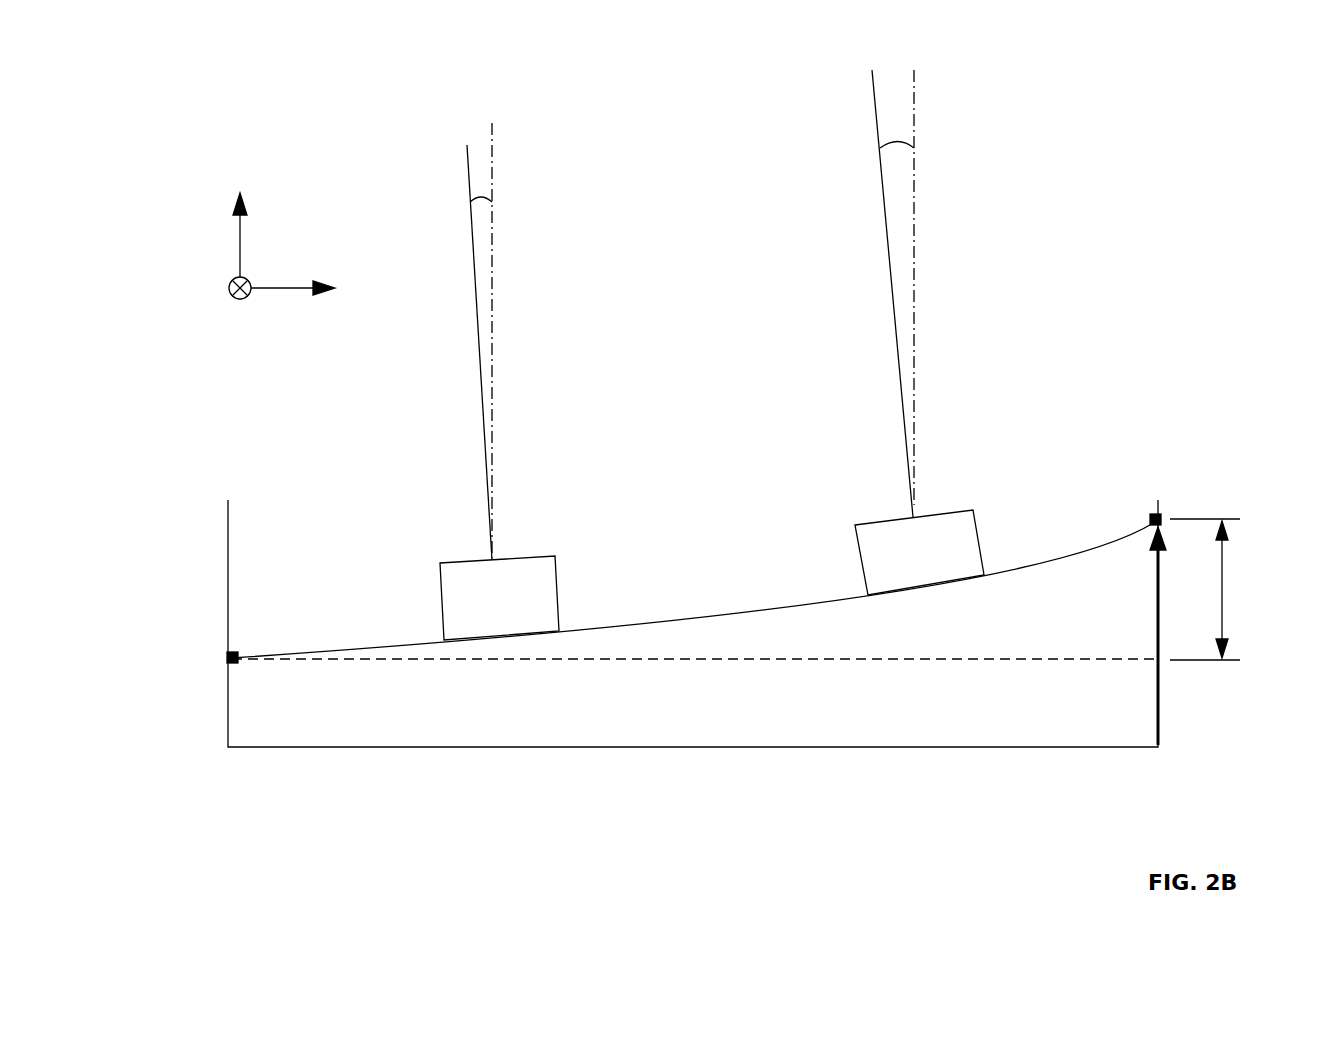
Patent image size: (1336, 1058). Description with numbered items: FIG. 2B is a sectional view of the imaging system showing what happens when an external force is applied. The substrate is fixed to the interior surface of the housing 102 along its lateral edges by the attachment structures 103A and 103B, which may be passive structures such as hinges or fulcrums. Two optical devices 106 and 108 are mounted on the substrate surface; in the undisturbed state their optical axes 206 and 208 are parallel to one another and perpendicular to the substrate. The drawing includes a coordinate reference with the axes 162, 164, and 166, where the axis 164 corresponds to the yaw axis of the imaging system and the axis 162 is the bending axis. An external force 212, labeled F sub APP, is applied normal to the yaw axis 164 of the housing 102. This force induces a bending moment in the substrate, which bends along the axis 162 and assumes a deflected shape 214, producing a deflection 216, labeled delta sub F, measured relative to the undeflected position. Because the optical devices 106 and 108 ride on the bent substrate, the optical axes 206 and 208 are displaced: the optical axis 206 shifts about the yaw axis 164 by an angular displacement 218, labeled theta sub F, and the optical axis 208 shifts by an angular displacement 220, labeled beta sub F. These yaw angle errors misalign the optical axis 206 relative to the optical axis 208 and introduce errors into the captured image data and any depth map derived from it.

The housing 102 is at (228, 700).
The attachment structure 103A is at (237, 665).
The attachment structure 103B is at (1148, 528).
The optical device 106 is at (543, 588).
The optical device 108 is at (957, 537).
The axis 162 is at (295, 288).
The yaw axis 164 is at (240, 300).
The axis 166 is at (240, 228).
The optical axis 206 is at (478, 350).
The optical axis 208 is at (886, 228).
The external force 212 is at (1155, 690).
The deflected shape 214 is at (850, 600).
The deflection 216 is at (1222, 615).
The angular displacement 218 is at (490, 200).
The angular displacement 220 is at (905, 143).